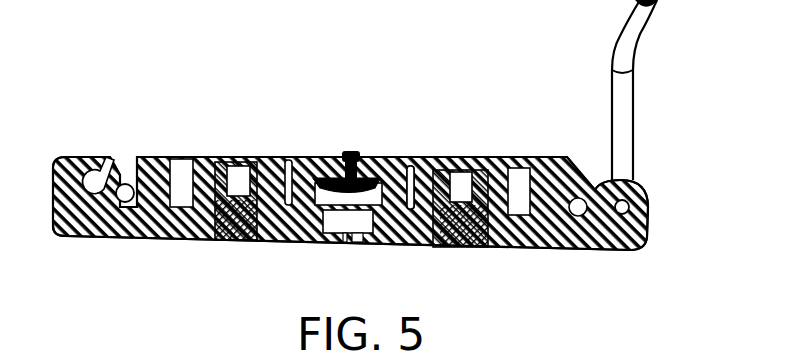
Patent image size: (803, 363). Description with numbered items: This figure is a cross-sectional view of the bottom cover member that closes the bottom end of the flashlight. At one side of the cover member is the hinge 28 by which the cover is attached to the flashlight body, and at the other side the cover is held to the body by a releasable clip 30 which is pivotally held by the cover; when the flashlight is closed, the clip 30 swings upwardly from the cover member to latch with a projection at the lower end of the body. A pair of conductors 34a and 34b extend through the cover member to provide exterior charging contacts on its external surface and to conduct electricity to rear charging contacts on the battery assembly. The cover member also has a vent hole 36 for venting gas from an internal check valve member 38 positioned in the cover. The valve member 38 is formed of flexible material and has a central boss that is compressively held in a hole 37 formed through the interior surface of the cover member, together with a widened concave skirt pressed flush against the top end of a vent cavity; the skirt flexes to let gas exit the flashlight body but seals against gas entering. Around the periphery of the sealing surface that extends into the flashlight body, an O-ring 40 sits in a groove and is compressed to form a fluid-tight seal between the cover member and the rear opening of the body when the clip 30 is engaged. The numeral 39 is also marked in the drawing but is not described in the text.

The hinge 28 is at (96, 150).
The releasable clip 30 is at (635, 97).
The conductor 34a is at (490, 290).
The conductor 34b is at (245, 247).
The vent hole 36 is at (347, 247).
The hole 37 is at (403, 160).
The check valve member 38 is at (362, 157).
The pin 39 is at (410, 160).
The O-ring 40 is at (121, 184).